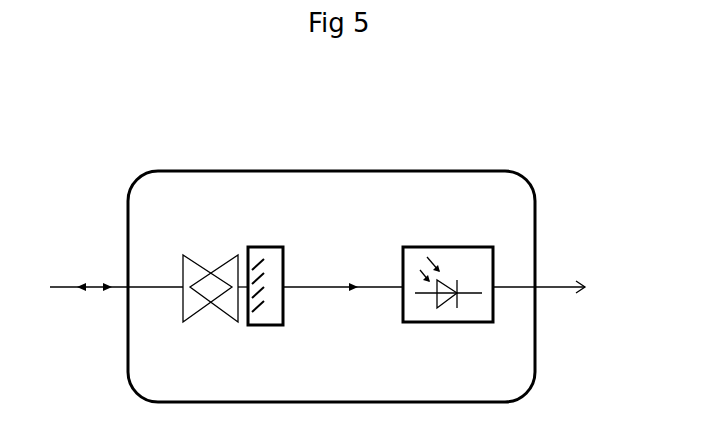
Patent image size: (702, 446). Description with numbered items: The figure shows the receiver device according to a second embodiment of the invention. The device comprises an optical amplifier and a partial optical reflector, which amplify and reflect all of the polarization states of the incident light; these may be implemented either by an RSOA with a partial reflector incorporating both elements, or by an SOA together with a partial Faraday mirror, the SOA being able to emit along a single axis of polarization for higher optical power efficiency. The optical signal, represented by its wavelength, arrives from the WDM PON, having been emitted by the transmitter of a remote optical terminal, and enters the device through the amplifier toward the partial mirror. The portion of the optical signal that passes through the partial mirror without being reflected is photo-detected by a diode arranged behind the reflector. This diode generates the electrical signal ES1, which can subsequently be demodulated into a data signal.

The electrical signal ES1 is at (539, 273).